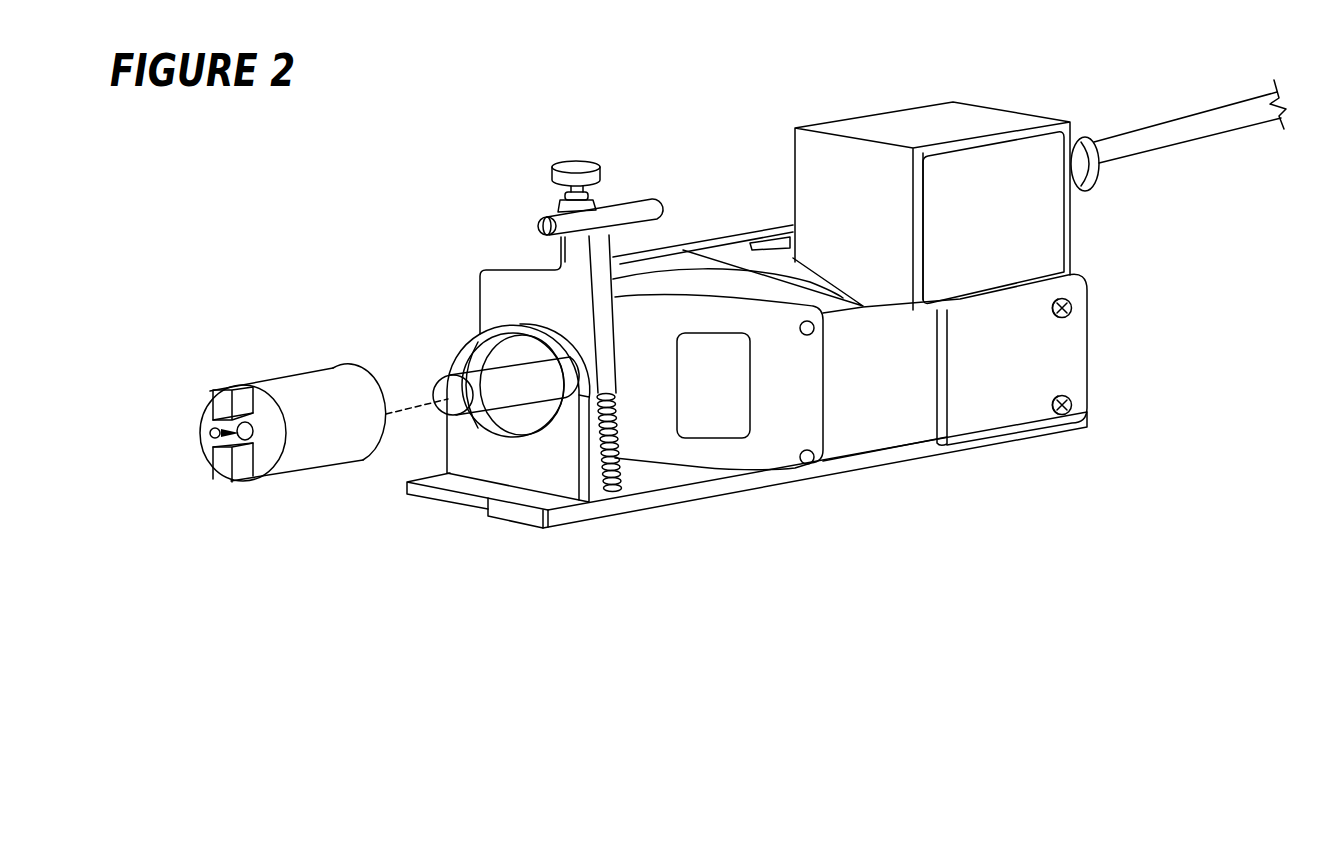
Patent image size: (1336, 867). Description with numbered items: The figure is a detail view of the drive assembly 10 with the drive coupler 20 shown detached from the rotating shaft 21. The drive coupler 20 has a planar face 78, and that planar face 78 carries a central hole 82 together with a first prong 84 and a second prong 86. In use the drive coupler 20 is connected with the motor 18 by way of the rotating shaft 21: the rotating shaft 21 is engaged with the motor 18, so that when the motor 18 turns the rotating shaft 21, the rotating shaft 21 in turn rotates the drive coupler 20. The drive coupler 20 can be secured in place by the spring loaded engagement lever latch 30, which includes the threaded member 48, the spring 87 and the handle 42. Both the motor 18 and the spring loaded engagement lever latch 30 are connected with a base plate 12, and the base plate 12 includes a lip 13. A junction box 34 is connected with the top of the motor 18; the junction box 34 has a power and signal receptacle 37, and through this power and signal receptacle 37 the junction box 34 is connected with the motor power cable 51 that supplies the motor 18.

The drive assembly 10 is at (846, 318).
The base plate 12 is at (1089, 423).
The lip 13 is at (510, 516).
The motor 18 is at (877, 423).
The drive coupler 20 is at (297, 383).
The rotating shaft 21 is at (513, 372).
The spring loaded engagement lever latch 30 is at (572, 253).
The junction box 34 is at (940, 120).
The power and signal receptacle 37 is at (1077, 183).
The handle 42 is at (630, 208).
The threaded member 48 is at (577, 166).
The motor power cable 51 is at (1193, 120).
The planar face 78 is at (211, 418).
The central hole 82 is at (210, 435).
The first prong 84 is at (221, 403).
The second prong 86 is at (220, 463).
The spring 87 is at (620, 472).